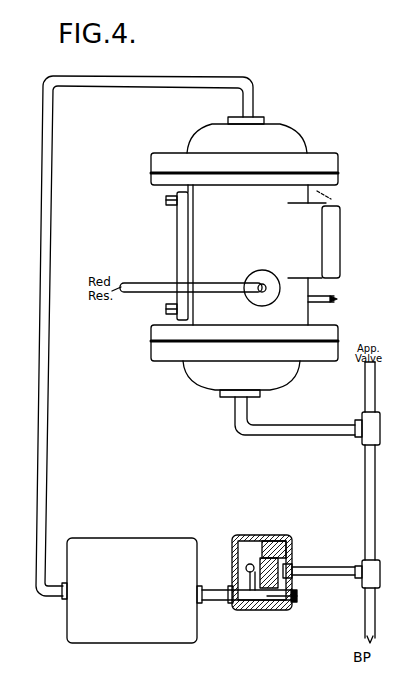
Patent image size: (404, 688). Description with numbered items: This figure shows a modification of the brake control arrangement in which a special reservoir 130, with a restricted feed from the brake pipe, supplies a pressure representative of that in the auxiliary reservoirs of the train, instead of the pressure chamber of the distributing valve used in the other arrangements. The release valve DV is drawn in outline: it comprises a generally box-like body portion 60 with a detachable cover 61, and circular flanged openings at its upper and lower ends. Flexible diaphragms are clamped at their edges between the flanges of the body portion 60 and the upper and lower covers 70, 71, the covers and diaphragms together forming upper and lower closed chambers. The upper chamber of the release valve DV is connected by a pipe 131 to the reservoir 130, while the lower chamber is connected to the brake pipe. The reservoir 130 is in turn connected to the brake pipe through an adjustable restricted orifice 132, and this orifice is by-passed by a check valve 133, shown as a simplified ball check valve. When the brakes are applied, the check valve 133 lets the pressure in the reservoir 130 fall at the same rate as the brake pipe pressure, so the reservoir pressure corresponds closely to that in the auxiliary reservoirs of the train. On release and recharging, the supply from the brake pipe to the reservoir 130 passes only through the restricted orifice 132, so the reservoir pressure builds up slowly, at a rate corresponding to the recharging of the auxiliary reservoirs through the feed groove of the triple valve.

The release valve DV is at (202, 223).
The body portion 60 is at (293, 318).
The detachable cover 61 is at (180, 250).
The cover 70 is at (288, 137).
The cover 71 is at (203, 378).
The reservoir 130 is at (173, 631).
The pipe 131 is at (43, 373).
The adjustable restricted orifice 132 is at (275, 611).
The check valve 133 is at (235, 548).